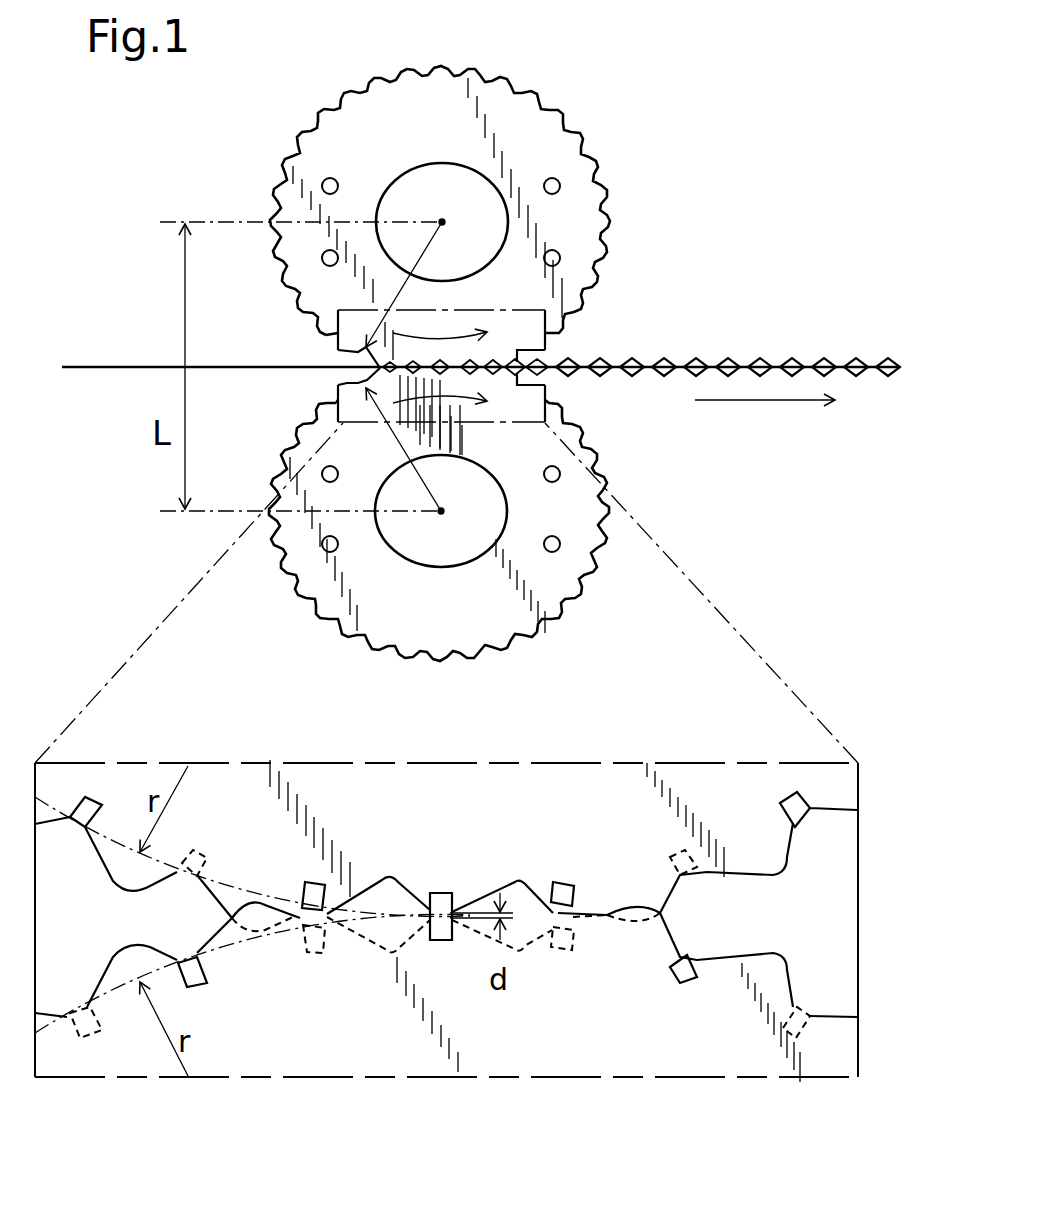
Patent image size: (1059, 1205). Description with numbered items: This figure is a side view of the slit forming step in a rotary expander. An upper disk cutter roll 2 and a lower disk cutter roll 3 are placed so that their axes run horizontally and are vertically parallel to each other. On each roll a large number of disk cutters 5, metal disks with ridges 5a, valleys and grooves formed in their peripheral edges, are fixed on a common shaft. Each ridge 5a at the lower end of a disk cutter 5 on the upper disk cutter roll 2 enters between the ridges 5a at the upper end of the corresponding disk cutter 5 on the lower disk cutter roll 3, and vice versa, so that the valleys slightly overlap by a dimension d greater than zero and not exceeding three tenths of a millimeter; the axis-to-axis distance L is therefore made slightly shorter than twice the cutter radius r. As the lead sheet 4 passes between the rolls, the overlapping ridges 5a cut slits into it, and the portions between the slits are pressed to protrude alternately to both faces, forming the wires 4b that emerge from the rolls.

The upper disk cutter roll 2 is at (297, 118).
The lower disk cutter roll 3 is at (288, 608).
The lead sheet 4 is at (124, 366).
The wires 4b is at (632, 358).
The disk cutters 5 is at (563, 147).
The ridges 5a is at (334, 320).